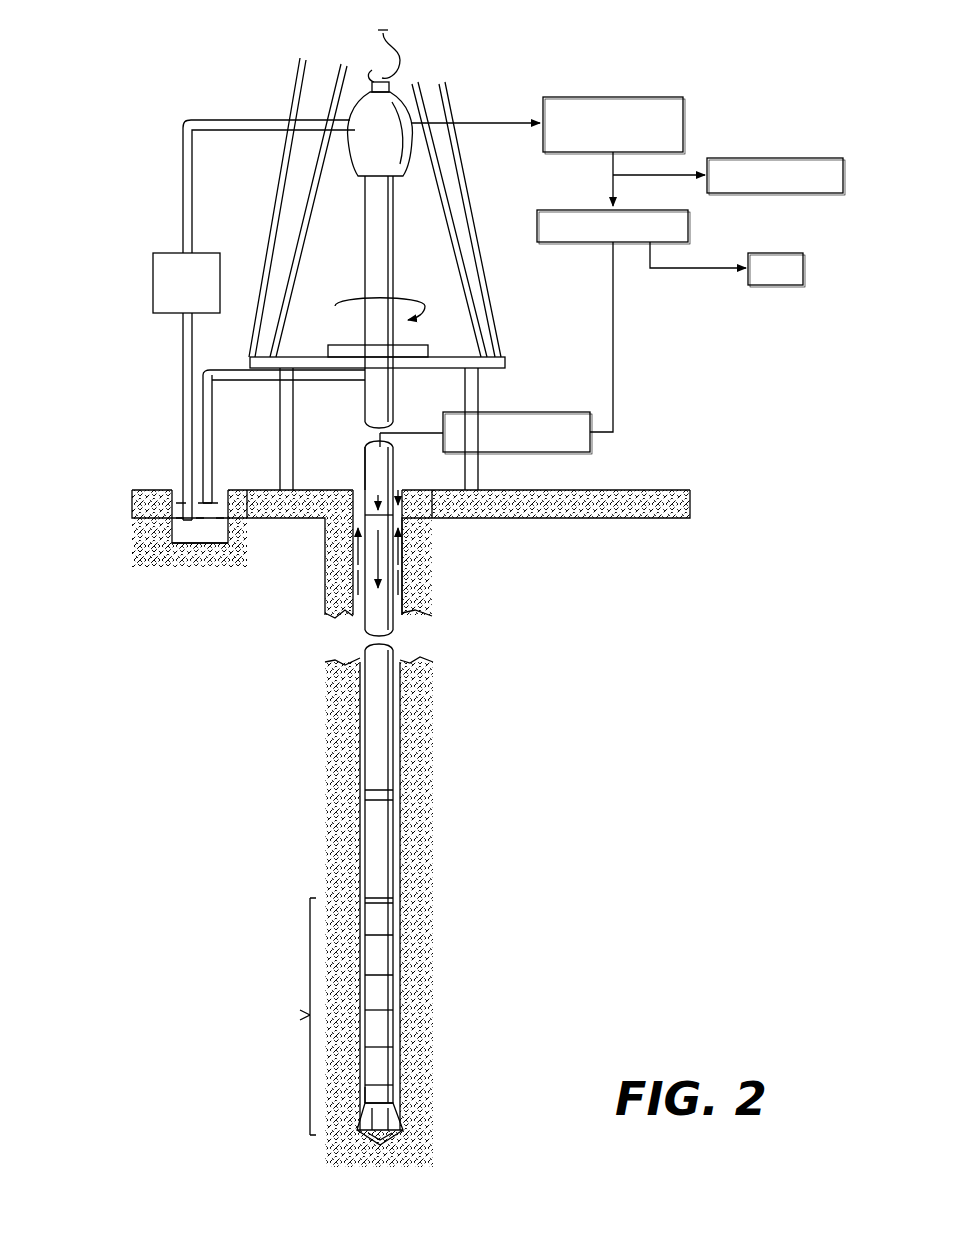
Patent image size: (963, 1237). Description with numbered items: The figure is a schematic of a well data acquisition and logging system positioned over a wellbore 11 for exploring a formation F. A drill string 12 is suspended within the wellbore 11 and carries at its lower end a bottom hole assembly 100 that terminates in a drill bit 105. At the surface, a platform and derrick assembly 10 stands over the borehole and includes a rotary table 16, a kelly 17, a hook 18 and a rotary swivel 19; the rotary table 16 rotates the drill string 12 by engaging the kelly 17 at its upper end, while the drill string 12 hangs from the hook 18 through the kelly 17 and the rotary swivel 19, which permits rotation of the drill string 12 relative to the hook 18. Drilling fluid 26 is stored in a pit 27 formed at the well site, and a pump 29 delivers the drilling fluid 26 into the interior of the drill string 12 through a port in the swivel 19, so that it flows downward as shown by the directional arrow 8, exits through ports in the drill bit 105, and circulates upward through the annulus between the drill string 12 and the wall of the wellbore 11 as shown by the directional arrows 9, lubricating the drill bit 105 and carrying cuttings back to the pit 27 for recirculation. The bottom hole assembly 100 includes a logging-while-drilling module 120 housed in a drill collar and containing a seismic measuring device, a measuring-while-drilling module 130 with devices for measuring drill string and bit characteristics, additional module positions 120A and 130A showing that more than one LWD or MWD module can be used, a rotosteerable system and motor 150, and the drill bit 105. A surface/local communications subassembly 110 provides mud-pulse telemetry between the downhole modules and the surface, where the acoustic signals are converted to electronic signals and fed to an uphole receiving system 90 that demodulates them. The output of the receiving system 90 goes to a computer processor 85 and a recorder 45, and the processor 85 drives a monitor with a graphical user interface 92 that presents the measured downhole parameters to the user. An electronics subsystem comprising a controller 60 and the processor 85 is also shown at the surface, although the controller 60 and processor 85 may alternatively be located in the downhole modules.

The platform and derrick assembly 10 is at (80, 62).
The hook 18 is at (390, 40).
The rotary swivel 19 is at (355, 172).
The kelly 17 is at (378, 268).
The rotary table 16 is at (418, 346).
The pump 29 is at (152, 258).
The pit 27 is at (176, 488).
The drilling fluid 26 is at (205, 545).
The drill string 12 is at (375, 492).
The wellbore 11 is at (400, 485).
The directional arrows 9 is at (356, 565).
The directional arrow 8 is at (372, 580).
The formation F is at (512, 508).
The uphole receiving system 90 is at (660, 96).
The recorder 45 is at (780, 157).
The computer processor 85 is at (690, 230).
The graphical user interface 92 is at (778, 287).
The controller 60 is at (538, 410).
The bottom hole assembly 100 is at (300, 1015).
The surface/local communications subassembly 110 is at (382, 918).
The logging-while-drilling module 120 is at (385, 955).
The measuring-while-drilling module 130 is at (390, 982).
The LWD module 120A is at (385, 1026).
The MWD module 130A is at (385, 1066).
The rotosteerable system and motor 150 is at (385, 1093).
The drill bit 105 is at (385, 1118).